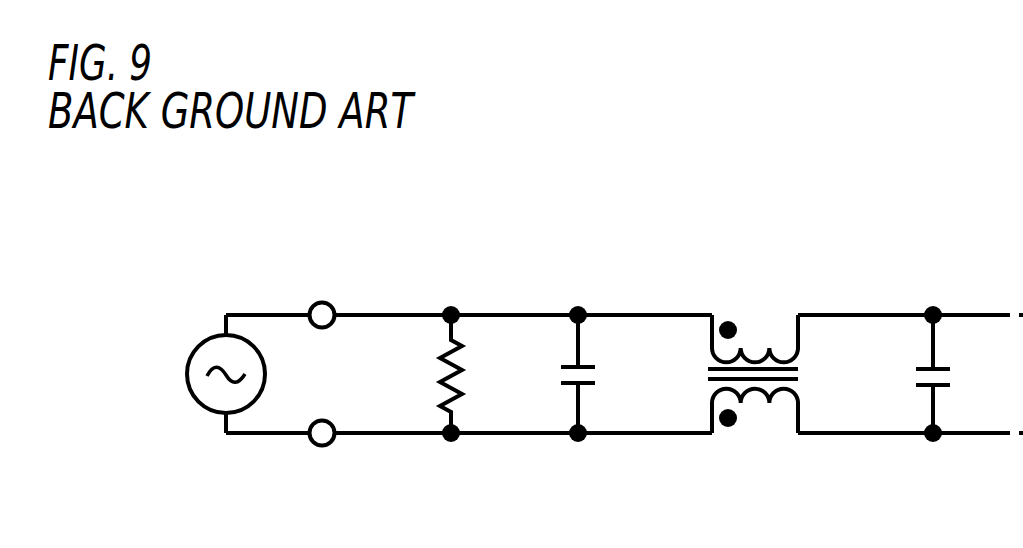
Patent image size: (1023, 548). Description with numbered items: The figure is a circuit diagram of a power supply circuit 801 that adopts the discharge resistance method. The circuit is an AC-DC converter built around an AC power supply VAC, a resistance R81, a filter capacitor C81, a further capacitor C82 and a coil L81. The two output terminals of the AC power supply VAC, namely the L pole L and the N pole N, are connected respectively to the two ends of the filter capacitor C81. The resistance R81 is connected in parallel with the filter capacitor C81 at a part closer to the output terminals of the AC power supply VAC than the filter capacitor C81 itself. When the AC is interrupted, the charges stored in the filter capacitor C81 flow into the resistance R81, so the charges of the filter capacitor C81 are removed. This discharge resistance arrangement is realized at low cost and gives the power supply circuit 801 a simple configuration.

The power supply circuit 801 is at (270, 218).
The AC power supply VAC is at (192, 374).
The L pole L is at (259, 308).
The N pole N is at (259, 442).
The resistance R81 is at (426, 374).
The filter capacitor C81 is at (554, 374).
The coil L81 is at (728, 374).
The capacitor C82 is at (909, 374).